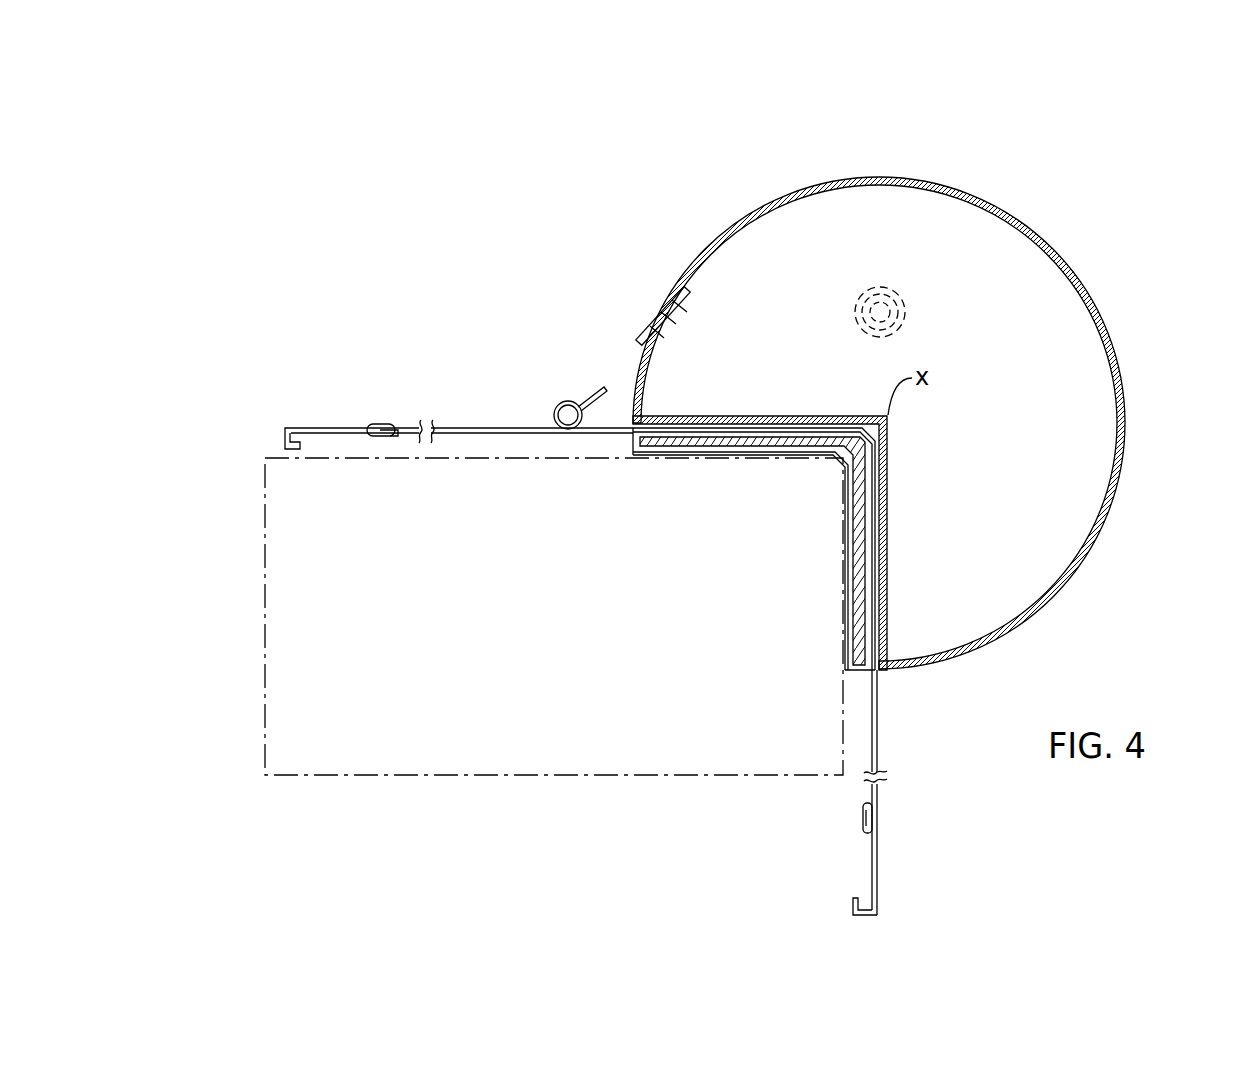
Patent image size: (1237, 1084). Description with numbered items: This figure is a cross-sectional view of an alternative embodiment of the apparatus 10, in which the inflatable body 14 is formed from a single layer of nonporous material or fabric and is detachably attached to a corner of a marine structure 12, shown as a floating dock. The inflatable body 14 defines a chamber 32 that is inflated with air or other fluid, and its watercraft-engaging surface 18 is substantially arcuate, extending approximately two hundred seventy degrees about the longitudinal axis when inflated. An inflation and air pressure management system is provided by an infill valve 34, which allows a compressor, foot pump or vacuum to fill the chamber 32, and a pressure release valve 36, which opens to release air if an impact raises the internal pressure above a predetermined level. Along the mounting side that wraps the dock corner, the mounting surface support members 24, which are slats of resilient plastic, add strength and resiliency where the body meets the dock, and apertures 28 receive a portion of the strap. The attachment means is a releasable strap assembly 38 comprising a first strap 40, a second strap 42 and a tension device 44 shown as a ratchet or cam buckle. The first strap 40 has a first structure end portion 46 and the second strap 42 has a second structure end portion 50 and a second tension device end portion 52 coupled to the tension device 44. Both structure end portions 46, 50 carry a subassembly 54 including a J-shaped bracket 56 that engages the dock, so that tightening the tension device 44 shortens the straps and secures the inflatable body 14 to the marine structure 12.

The apparatus 10 is at (1112, 238).
The marine structure 12 is at (262, 614).
The inflatable body 14 is at (1130, 347).
The watercraft-engaging surface 18 is at (788, 193).
The mounting surface support members 24 is at (697, 440).
The apertures 28 is at (773, 440).
The chamber 32 is at (962, 240).
The infill valve 34 is at (879, 288).
The pressure release valve 36 is at (656, 318).
The releasable strap assembly 38 is at (452, 352).
The first strap 40 is at (478, 425).
The second strap 42 is at (874, 705).
The tension device 44 is at (567, 400).
The first structure end portion 46 is at (886, 832).
The second structure end portion 50 is at (330, 413).
The second tension device end portion 52 is at (614, 428).
The subassembly 54 is at (908, 796).
The bracket 56 is at (284, 440).